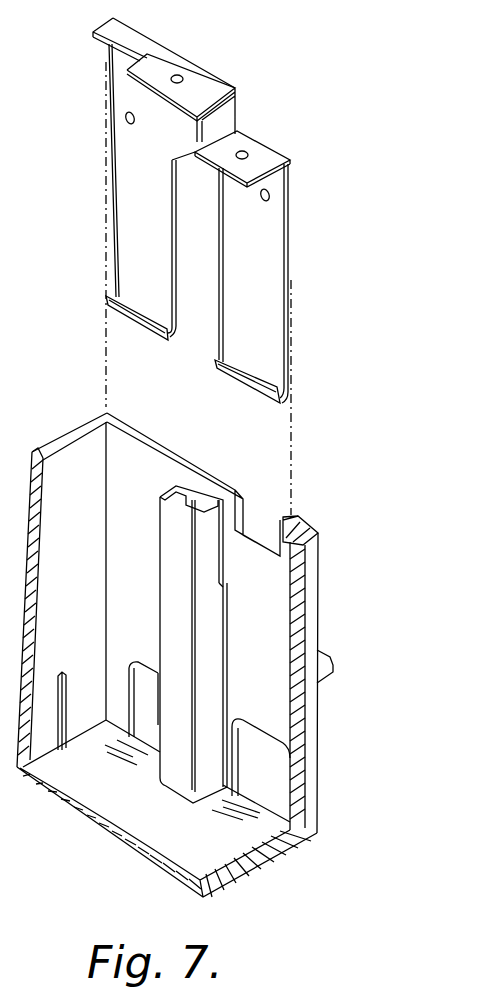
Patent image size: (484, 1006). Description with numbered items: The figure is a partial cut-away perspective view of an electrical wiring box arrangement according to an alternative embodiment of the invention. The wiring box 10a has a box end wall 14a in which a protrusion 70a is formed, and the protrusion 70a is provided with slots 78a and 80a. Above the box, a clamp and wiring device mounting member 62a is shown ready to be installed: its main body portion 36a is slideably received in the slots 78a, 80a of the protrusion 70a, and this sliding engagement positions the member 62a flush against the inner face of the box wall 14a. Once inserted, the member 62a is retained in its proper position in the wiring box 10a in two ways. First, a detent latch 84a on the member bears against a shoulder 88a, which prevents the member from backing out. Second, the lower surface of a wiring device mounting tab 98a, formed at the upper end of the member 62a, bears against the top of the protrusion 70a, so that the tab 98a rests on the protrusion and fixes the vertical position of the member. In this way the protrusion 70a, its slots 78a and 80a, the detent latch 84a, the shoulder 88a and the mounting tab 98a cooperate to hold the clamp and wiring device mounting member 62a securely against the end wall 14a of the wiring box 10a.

The wiring box 10a is at (328, 598).
The box end wall 14a is at (148, 595).
The main body portion 36a is at (197, 160).
The clamp and wiring device mounting member 62a is at (300, 208).
The protrusion 70a is at (180, 618).
The slot 78a is at (189, 479).
The slot 80a is at (226, 568).
The detent latch 84a is at (200, 127).
The shoulder 88a is at (192, 500).
The wiring device mounting tab 98a is at (162, 65).